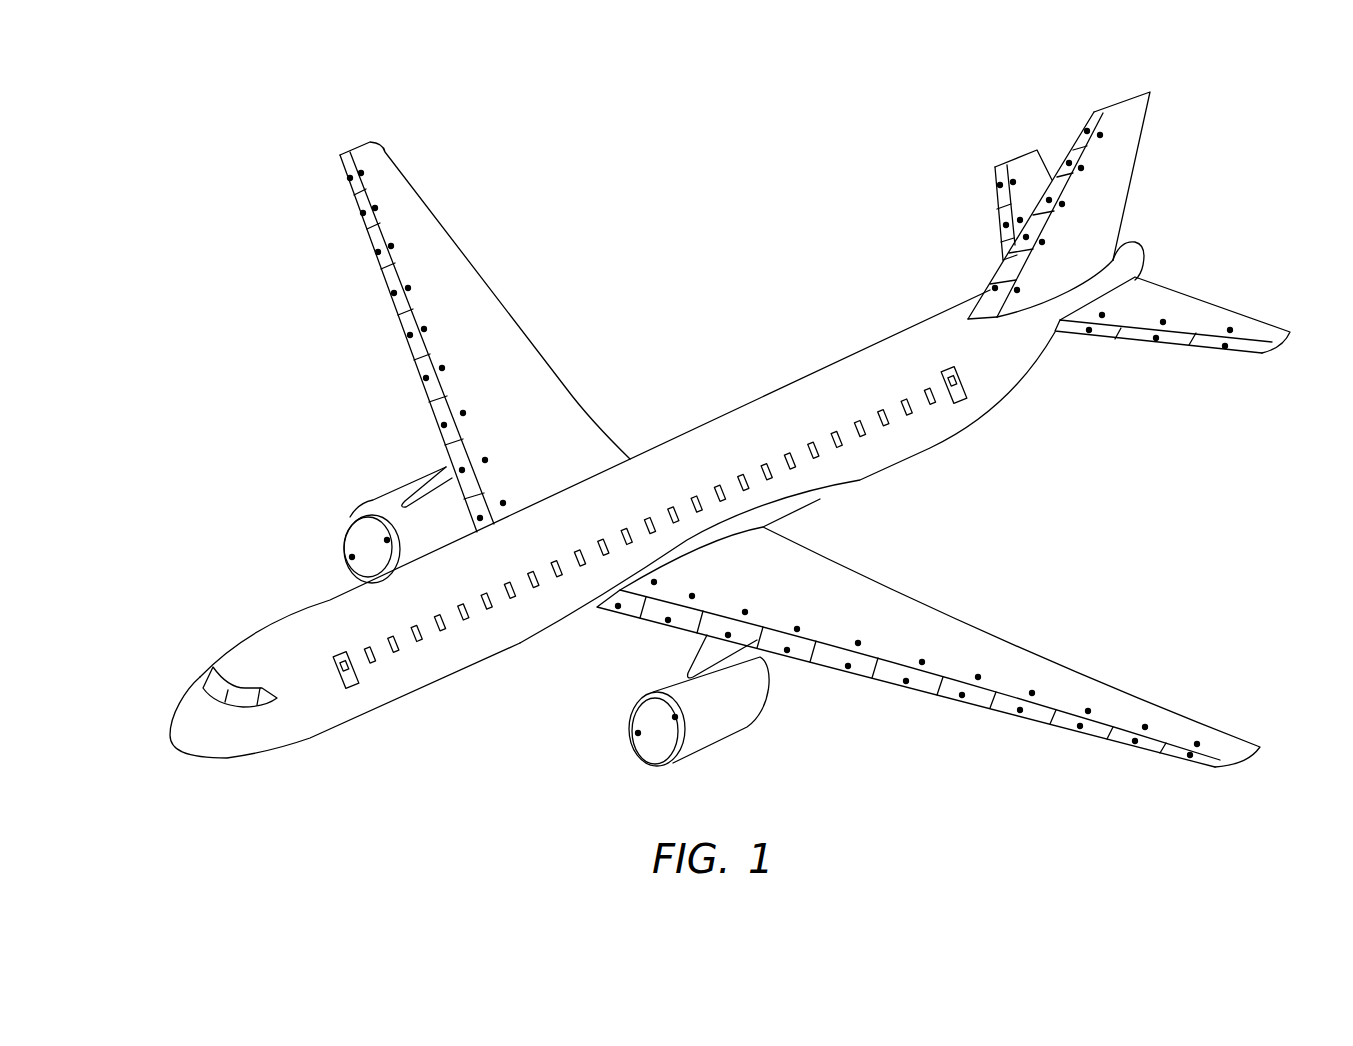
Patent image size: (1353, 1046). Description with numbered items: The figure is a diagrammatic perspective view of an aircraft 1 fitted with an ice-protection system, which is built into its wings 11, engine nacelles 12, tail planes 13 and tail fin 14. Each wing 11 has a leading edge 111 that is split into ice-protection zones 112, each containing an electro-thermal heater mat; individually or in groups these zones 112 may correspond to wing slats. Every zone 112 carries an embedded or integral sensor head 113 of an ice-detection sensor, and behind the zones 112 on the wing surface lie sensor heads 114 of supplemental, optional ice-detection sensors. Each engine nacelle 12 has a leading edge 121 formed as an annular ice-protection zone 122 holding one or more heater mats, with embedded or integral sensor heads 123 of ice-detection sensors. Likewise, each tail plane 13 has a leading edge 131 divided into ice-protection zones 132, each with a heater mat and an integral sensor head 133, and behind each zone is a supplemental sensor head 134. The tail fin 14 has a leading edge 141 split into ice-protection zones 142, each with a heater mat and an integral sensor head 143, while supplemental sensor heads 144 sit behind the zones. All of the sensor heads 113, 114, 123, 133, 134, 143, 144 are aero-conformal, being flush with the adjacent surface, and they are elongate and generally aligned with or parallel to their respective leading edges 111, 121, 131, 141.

The aircraft 1 is at (178, 347).
The wing 11 is at (500, 306).
The engine nacelle 12 is at (380, 503).
The tail plane 13 is at (1010, 160).
The tail fin 14 is at (1140, 115).
The leading edge 111 is at (395, 320).
The ice-protection zone 112 is at (358, 224).
The sensor head 113 is at (351, 178).
The sensor head 114 is at (363, 172).
The leading edge 121 is at (350, 548).
The annular ice-protection zone 122 is at (396, 570).
The sensor head 123 is at (386, 540).
The leading edge 131 is at (997, 208).
The ice-protection zone 132 is at (995, 175).
The sensor head 133 is at (999, 186).
The sensor head 134 is at (1014, 181).
The leading edge 141 is at (1085, 119).
The ice-protection zone 142 is at (1098, 110).
The sensor head 143 is at (994, 287).
The sensor head 144 is at (1102, 135).